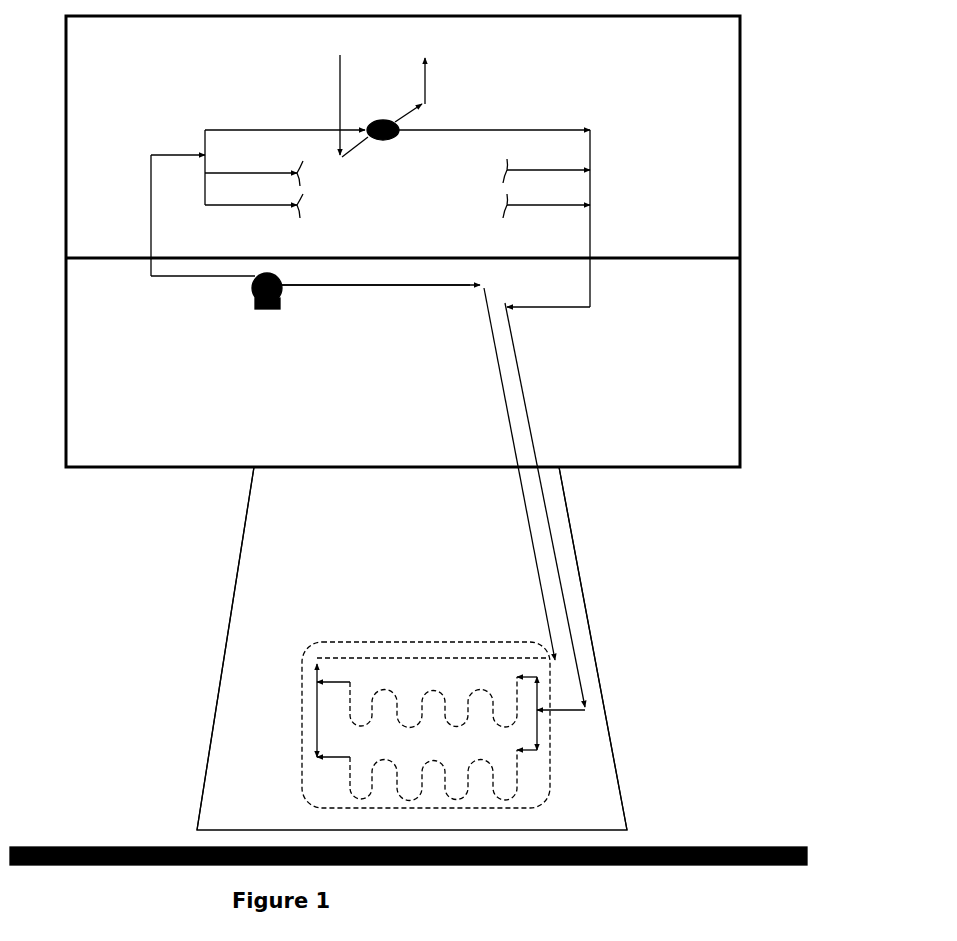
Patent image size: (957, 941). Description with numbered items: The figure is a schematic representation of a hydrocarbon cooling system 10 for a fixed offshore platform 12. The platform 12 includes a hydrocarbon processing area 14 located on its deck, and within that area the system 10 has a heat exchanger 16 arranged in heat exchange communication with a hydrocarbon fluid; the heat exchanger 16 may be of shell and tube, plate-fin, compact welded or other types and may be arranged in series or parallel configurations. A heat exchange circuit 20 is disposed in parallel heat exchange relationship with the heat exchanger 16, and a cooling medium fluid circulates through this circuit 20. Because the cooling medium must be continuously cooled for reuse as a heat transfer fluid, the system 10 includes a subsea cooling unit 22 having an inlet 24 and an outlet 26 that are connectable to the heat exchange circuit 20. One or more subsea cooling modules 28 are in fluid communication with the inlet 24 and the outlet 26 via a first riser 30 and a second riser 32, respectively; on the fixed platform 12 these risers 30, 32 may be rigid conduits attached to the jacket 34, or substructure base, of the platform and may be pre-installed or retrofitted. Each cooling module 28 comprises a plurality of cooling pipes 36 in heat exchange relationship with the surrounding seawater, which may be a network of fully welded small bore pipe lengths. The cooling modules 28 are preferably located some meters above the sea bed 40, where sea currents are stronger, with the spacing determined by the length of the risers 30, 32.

The hydrocarbon cooling system 10 is at (619, 624).
The fixed offshore platform 12 is at (743, 194).
The hydrocarbon processing area 14 is at (717, 124).
The heat exchanger 16 is at (377, 126).
The heat exchange circuit 20 is at (591, 234).
The subsea cooling unit 22 is at (605, 680).
The inlet 24 is at (506, 307).
The outlet 26 is at (481, 286).
The subsea cooling module 28 is at (353, 640).
The first riser 30 is at (530, 402).
The second riser 32 is at (500, 402).
The jacket 34 is at (578, 565).
The cooling pipes 36 is at (440, 691).
The sea bed 40 is at (667, 857).